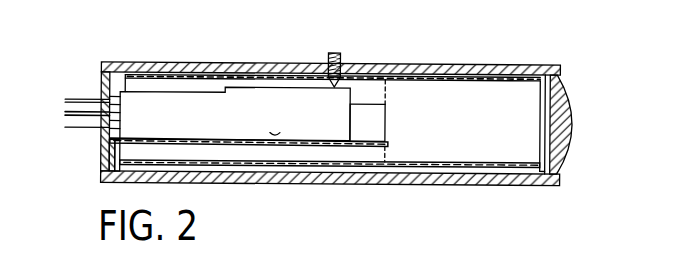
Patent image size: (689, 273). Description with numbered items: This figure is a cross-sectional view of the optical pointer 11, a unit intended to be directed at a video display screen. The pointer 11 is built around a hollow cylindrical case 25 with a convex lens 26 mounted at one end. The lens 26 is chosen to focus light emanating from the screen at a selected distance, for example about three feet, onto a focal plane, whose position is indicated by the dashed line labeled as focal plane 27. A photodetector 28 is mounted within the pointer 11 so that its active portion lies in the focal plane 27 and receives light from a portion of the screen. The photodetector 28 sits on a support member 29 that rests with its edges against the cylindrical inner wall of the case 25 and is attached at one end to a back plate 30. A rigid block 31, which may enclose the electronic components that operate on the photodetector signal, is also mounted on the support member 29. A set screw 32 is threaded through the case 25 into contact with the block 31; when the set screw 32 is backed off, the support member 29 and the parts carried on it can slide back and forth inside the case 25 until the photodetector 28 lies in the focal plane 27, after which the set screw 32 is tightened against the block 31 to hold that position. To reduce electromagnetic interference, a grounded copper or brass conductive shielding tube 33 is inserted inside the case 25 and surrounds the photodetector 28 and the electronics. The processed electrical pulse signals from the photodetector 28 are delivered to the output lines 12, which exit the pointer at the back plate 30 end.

The optical pointer 11 is at (331, 95).
The output lines 12 is at (80, 110).
The hollow cylindrical case 25 is at (142, 63).
The convex lens 26 is at (572, 116).
The focal plane 27 is at (386, 153).
The photodetector 28 is at (387, 114).
The support member 29 is at (328, 148).
The back plate 30 is at (100, 150).
The rigid block 31 is at (242, 88).
The set screw 32 is at (341, 61).
The conductive shielding tube 33 is at (480, 143).